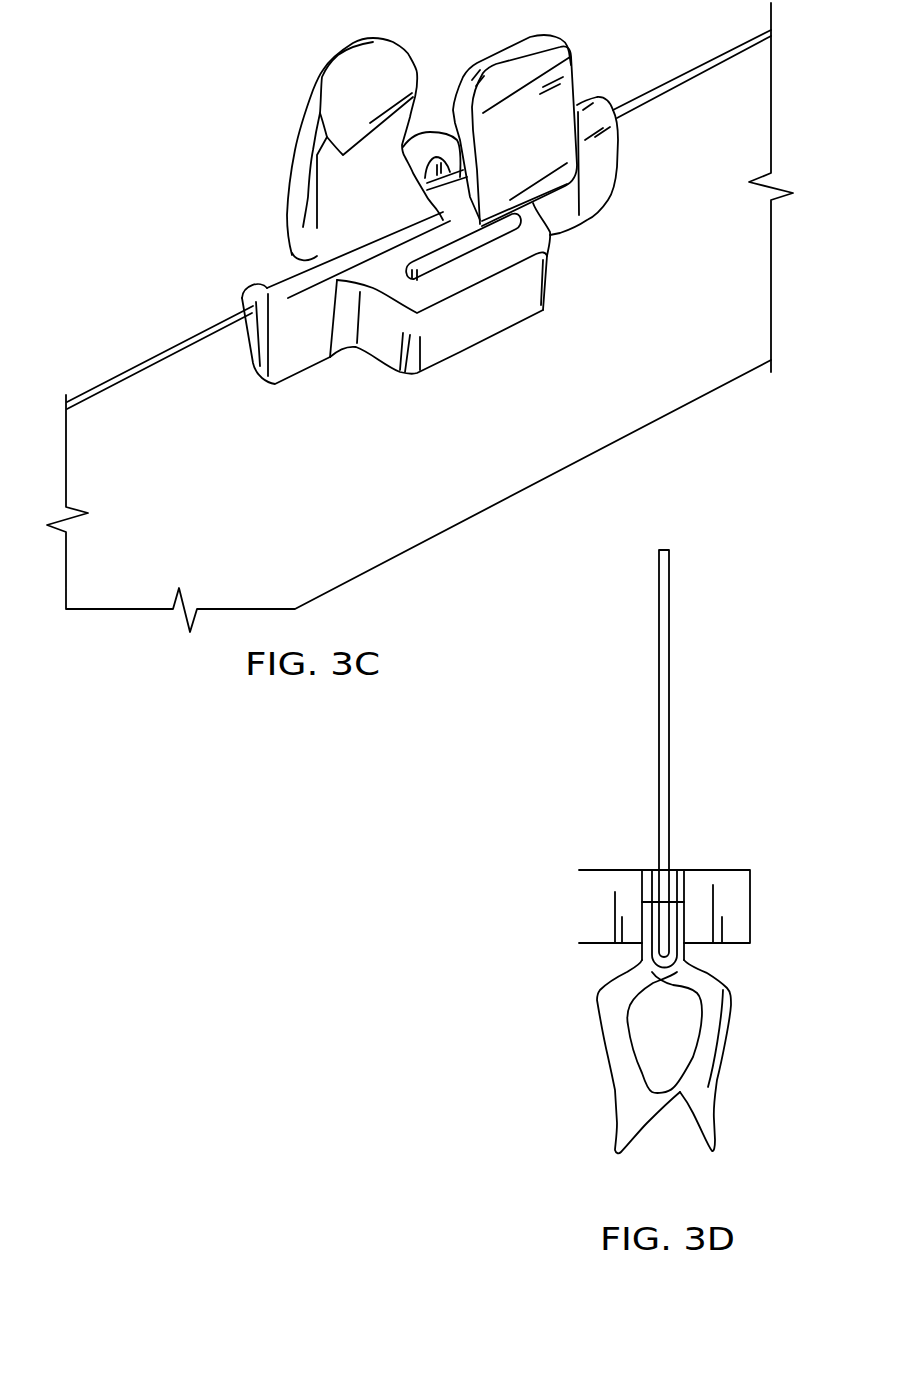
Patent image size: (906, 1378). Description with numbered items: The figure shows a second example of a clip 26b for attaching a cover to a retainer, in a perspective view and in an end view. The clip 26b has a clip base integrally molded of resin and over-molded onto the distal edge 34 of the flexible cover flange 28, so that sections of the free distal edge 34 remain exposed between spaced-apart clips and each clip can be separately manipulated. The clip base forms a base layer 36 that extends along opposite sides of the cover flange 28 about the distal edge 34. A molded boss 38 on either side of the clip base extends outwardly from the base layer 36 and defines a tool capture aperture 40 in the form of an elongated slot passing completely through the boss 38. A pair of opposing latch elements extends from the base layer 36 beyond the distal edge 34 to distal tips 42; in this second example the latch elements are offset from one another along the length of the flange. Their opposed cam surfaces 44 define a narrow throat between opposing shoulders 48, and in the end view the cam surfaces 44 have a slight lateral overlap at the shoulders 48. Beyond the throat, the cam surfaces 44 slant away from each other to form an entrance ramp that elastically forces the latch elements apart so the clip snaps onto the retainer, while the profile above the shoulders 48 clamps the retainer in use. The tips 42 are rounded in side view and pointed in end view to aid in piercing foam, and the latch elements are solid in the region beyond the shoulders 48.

In FIG. 3C, the clip 26b is at (228, 87).
In FIG. 3D, the cover flange 28 is at (668, 665).
In FIG. 3C, the distal edge 34 is at (683, 72).
In FIG. 3C, the base layer 36 is at (270, 280).
In FIG. 3D, the boss 38 is at (752, 905).
In FIG. 3C, the tool capture aperture 40 is at (455, 267).
In FIG. 3D, the distal tip 42 is at (623, 1153).
In FIG. 3D, the cam surface 44 is at (693, 1131).
In FIG. 3C, the shoulder 48 is at (343, 155).
In FIG. 3D, the shoulder 48 is at (665, 1093).